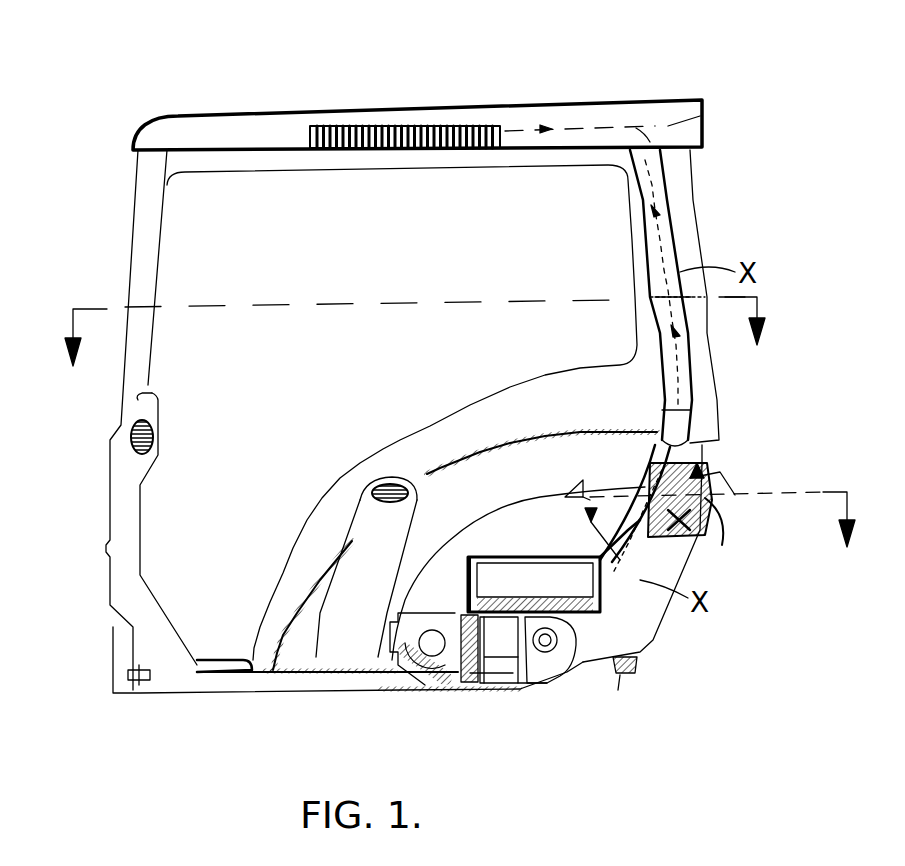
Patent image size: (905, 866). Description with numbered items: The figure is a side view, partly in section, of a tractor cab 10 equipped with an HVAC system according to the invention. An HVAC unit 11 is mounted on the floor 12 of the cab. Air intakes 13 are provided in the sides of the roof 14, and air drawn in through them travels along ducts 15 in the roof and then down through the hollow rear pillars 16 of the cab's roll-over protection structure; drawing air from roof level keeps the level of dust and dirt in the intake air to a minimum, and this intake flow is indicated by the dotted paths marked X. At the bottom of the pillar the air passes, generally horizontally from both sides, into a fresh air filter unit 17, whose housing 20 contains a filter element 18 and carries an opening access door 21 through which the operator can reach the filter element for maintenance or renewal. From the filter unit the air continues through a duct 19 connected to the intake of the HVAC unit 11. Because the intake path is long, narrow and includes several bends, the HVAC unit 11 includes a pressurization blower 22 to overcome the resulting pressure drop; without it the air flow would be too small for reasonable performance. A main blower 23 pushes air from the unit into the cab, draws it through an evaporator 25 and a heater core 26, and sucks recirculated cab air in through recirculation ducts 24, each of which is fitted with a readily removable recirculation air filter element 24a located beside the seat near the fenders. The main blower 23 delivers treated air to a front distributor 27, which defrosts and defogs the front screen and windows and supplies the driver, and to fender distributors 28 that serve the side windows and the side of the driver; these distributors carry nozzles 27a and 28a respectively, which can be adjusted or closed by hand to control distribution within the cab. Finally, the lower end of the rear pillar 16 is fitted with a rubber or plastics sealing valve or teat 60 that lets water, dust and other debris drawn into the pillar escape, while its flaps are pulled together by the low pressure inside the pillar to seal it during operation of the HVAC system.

The tractor cab 10 is at (248, 196).
The HVAC unit 11 is at (476, 668).
The floor 12 is at (225, 680).
The air intakes 13 is at (356, 128).
The roof 14 is at (530, 103).
The ducts 15 is at (700, 116).
The rear pillars 16 is at (695, 335).
The fresh air filter unit 17 is at (678, 522).
The filter element 18 is at (640, 490).
The duct 19 is at (591, 520).
The housing 20 is at (712, 490).
The access door 21 is at (722, 508).
The pressurization blower 22 is at (553, 640).
The main blower 23 is at (432, 663).
The recirculation ducts 24 is at (518, 570).
The recirculation air filter element 24a is at (497, 580).
The evaporator 25 is at (510, 660).
The heater core 26 is at (465, 610).
The front distributor 27 is at (128, 520).
The nozzles 27a is at (152, 447).
The fender distributors 28 is at (375, 548).
The nozzles 28a is at (383, 488).
The sealing valves or teats 60 is at (632, 670).